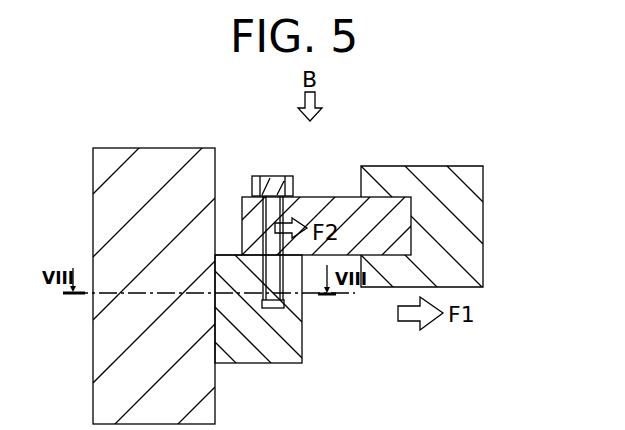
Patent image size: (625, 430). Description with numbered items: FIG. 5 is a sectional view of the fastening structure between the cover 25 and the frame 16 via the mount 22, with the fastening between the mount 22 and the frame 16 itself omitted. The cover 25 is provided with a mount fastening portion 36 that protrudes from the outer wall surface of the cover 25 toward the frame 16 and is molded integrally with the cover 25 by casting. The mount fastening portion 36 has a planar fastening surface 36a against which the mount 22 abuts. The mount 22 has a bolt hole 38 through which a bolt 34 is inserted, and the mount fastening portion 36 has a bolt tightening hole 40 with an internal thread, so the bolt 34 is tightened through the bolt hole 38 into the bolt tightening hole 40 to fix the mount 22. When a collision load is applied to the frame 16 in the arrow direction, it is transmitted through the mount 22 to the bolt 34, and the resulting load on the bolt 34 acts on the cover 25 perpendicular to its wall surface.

The frame 16 is at (420, 176).
The mount 22 is at (343, 203).
The cover 25 is at (157, 167).
The bolt 34 is at (300, 226).
The mount fastening portion 36 is at (268, 350).
The fastening surface 36a is at (225, 253).
The bolt hole 38 is at (280, 199).
The bolt tightening hole 40 is at (284, 303).